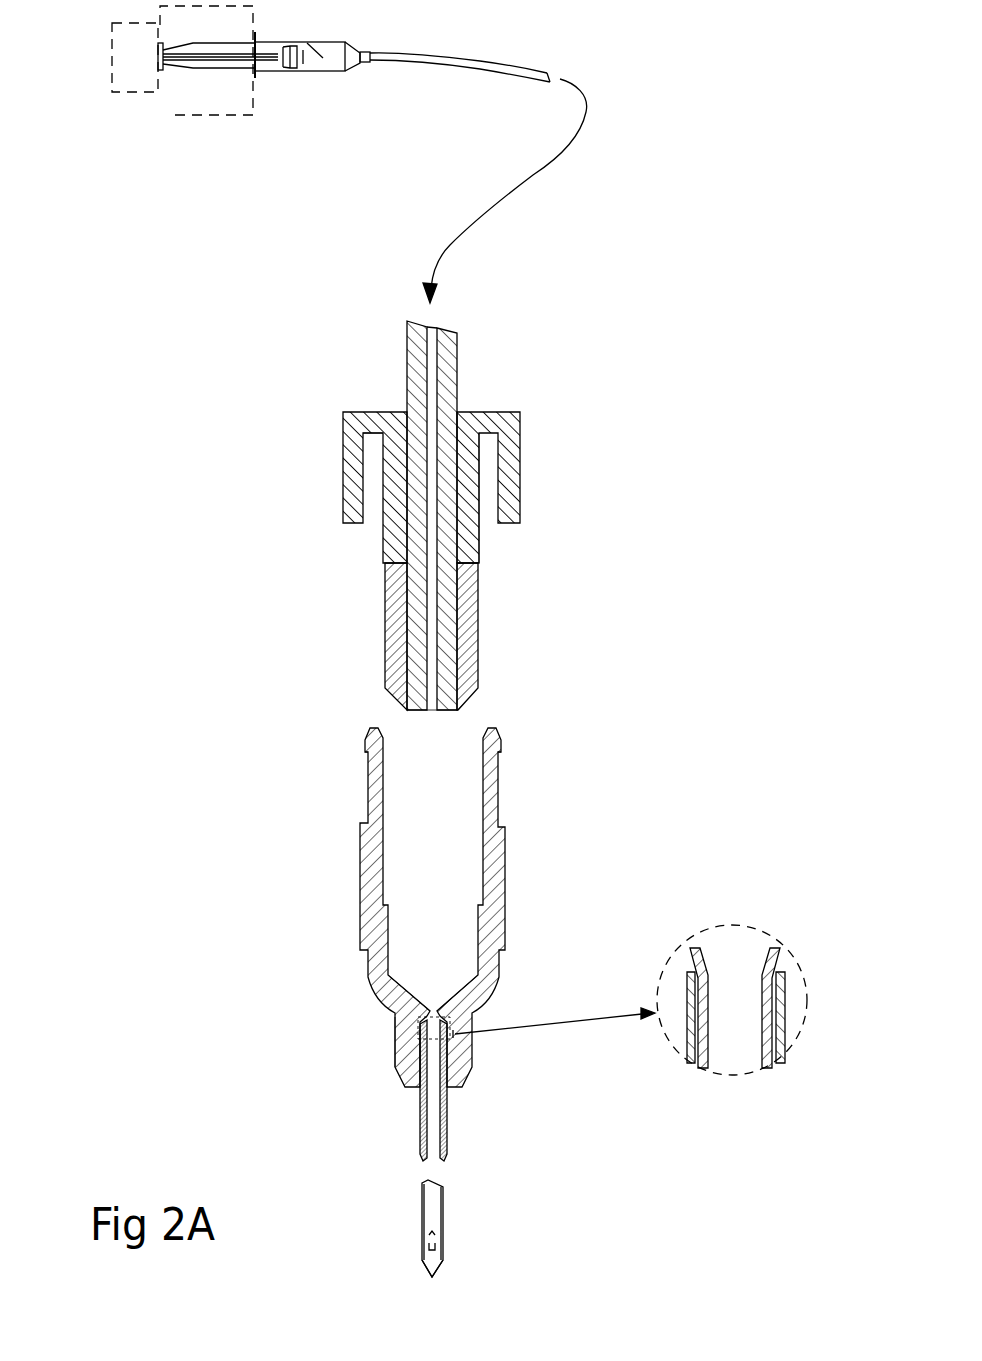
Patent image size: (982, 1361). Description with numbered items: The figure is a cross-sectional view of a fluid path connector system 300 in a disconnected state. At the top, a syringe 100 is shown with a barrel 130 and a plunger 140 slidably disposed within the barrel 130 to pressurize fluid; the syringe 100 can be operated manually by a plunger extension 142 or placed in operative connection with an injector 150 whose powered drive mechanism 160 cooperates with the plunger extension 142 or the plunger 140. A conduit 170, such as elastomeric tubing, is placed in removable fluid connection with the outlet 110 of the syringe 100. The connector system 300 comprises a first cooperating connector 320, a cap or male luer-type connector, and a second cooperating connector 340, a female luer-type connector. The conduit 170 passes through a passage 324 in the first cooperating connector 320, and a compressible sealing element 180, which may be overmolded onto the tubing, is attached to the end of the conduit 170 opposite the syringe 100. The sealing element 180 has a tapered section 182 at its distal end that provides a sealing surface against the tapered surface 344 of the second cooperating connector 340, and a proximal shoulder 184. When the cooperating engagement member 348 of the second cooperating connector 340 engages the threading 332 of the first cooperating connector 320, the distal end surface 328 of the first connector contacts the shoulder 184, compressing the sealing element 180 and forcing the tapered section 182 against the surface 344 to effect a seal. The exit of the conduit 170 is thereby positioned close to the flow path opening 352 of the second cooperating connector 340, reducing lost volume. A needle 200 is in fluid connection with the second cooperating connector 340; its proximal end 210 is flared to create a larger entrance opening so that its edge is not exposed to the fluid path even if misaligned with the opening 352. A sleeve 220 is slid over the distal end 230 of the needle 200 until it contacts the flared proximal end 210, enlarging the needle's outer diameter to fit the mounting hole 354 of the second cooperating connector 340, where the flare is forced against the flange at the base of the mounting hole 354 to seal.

The syringe 100 is at (293, 87).
The outlet 110 is at (365, 65).
The barrel 130 is at (332, 40).
The plunger 140 is at (313, 50).
The plunger extension 142 is at (237, 70).
The injector 150 is at (193, 122).
The powered drive mechanism 160 is at (126, 90).
The conduit 170 is at (457, 347).
The sealing element 180 is at (483, 652).
The tapered section 182 is at (478, 698).
The shoulder 184 is at (468, 565).
The connector system 300 is at (240, 635).
The first cooperating connector 320 is at (533, 485).
The passage 324 is at (458, 437).
The distal end surface 328 is at (465, 563).
The threading 332 is at (365, 448).
The second cooperating connector 340 is at (515, 885).
The tapered surface 344 is at (400, 998).
The cooperating engagement member 348 is at (507, 742).
The flow path opening 352 is at (424, 1018).
The mounting hole 354 is at (417, 1064).
The needle 200 is at (448, 1185).
The proximal end 210 is at (447, 1022).
The sleeve 220 is at (420, 1092).
The distal end 230 is at (448, 1268).